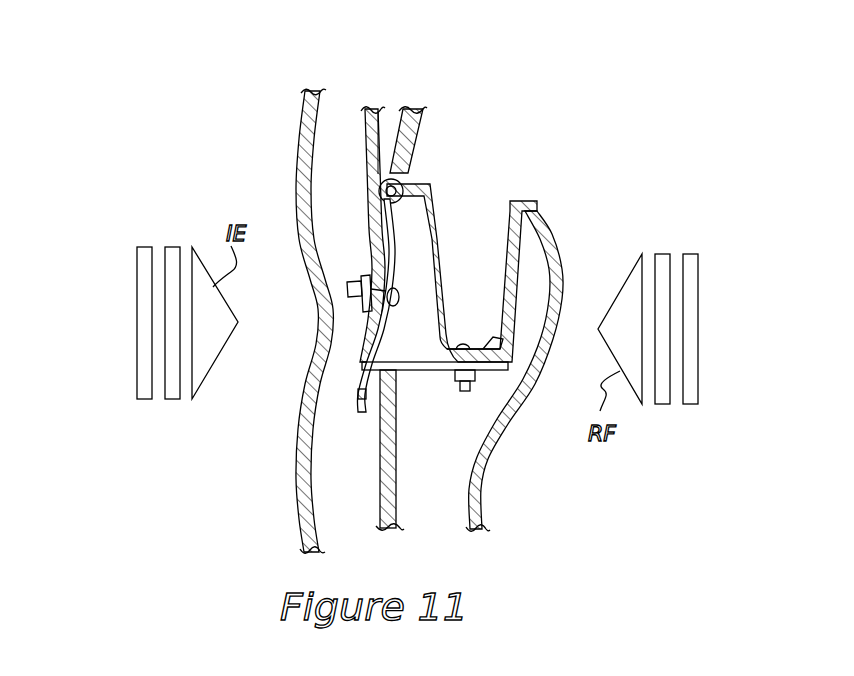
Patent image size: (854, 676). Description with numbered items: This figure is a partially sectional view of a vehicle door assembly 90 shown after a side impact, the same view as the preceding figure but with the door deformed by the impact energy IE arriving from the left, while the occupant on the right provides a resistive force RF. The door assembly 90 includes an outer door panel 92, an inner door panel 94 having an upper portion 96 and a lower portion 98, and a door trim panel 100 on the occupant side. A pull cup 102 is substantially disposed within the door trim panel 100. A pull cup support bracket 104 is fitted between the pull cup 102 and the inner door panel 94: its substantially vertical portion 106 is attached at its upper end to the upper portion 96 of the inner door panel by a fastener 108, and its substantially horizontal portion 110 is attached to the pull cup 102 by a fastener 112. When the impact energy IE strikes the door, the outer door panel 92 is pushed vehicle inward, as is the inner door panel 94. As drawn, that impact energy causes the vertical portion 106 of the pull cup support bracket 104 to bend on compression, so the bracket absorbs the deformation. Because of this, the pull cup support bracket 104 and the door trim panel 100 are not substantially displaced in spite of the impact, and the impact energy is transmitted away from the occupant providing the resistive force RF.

The door assembly 90 is at (250, 200).
The outer door panel 92 is at (305, 147).
The inner door panel 94 is at (358, 137).
The upper portion 96 is at (365, 190).
The lower portion 98 is at (381, 487).
The door trim panel 100 is at (486, 506).
The pull cup 102 is at (435, 236).
The pull cup support bracket 104 is at (358, 389).
The vertical portion 106 is at (362, 347).
The fastener 108 is at (398, 294).
The horizontal portion 110 is at (410, 374).
The fastener 112 is at (474, 392).